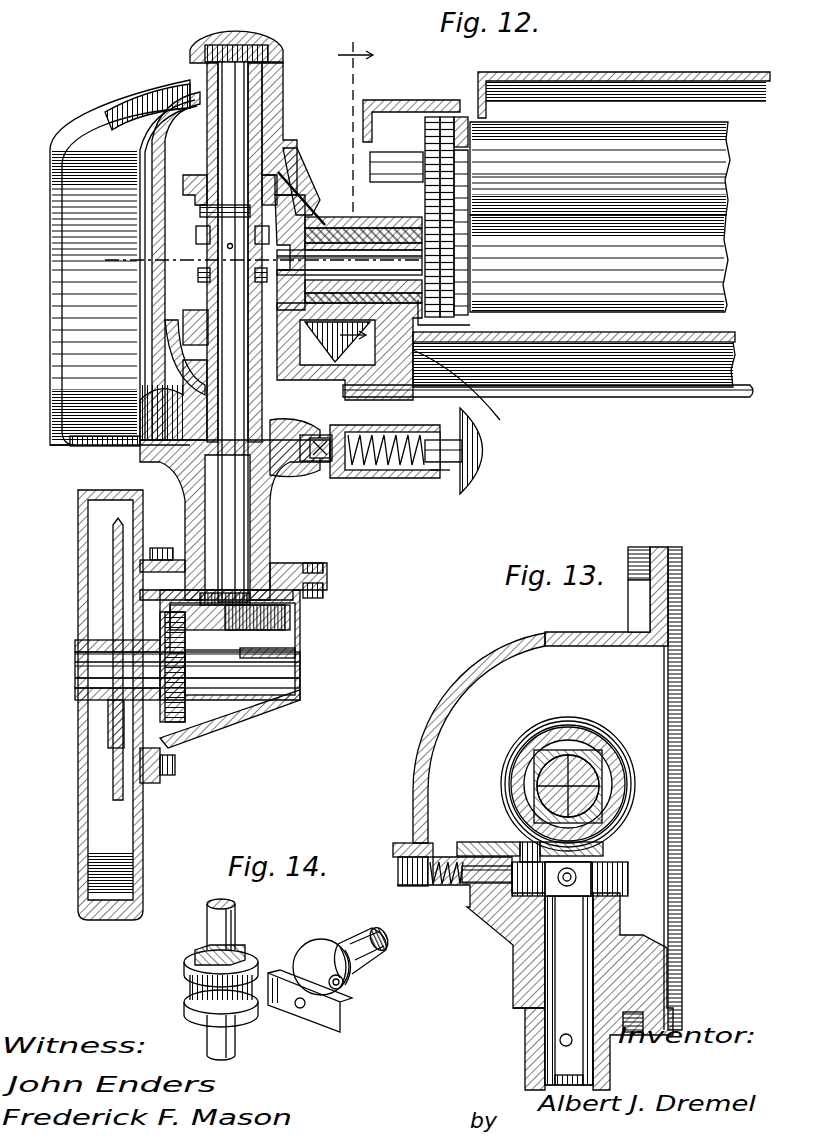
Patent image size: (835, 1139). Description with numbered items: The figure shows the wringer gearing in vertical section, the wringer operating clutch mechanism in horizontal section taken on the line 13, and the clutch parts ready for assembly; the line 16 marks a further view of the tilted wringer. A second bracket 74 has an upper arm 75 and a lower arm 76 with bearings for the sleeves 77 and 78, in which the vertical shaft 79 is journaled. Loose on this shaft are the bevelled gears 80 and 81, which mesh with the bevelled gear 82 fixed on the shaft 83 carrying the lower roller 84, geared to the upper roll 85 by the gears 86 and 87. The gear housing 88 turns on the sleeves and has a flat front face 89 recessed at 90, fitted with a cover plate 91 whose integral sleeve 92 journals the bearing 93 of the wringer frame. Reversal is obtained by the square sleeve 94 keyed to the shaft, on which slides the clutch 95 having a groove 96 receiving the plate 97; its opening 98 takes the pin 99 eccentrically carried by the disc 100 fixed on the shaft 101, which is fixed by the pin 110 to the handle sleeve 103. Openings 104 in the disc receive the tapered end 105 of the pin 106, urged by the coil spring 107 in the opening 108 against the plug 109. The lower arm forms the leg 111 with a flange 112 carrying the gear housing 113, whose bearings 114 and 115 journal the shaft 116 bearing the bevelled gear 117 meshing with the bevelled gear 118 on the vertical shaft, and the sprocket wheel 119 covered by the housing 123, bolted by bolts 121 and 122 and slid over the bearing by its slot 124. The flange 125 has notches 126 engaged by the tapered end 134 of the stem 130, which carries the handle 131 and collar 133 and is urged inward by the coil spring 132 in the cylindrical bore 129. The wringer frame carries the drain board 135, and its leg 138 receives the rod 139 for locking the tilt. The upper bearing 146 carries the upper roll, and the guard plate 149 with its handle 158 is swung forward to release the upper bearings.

In FIG. 12, the section line 13— 13 is at (256, 262).
In FIG. 12, the section line 16— 16 is at (355, 193).
In FIG. 12, the second bracket 74 is at (58, 250).
In FIG. 12, the upper arm 75 is at (125, 118).
In FIG. 12, the lower arm 76 is at (80, 447).
In FIG. 12, the upper sleeve 77 is at (272, 92).
In FIG. 12, the lower sleeve 78 is at (170, 455).
In FIG. 12, the vertical shaft 79 is at (230, 78).
In FIG. 13, the vertical shaft 79 is at (615, 814).
In FIG. 14, the vertical shaft 79 is at (207, 920).
In FIG. 12, the bevelled gear 80 is at (278, 180).
In FIG. 12, the bevelled gear 81 is at (185, 330).
In FIG. 12, the bevelled gear 82 is at (300, 205).
In FIG. 12, the roller shaft 83 is at (350, 213).
In FIG. 12, the lower roller 84 is at (599, 263).
In FIG. 12, the upper roll 85 is at (600, 168).
In FIG. 12, the gear 86 is at (446, 268).
In FIG. 12, the gear 87 is at (433, 118).
In FIG. 12, the gear housing 88 is at (155, 212).
In FIG. 13, the gear housing 88 is at (478, 668).
In FIG. 13, the flat front face 89 is at (676, 1033).
In FIG. 13, the recess 90 is at (676, 990).
In FIG. 12, the cover plate 91 is at (290, 200).
In FIG. 12, the outwardly extending sleeve 92 is at (445, 290).
In FIG. 12, the end bearing 93 is at (425, 322).
In FIG. 12, the sleeve 94 is at (205, 224).
In FIG. 13, the sleeve 94 is at (605, 777).
In FIG. 14, the sleeve 94 is at (238, 945).
In FIG. 12, the clutch 95 is at (200, 250).
In FIG. 13, the clutch 95 is at (592, 737).
In FIG. 14, the clutch 95 is at (252, 962).
In FIG. 13, the circumferential groove 96 is at (540, 736).
In FIG. 14, the circumferential groove 96 is at (192, 988).
In FIG. 13, the plate 97 is at (468, 845).
In FIG. 14, the plate 97 is at (326, 1018).
In FIG. 14, the opening 98 is at (297, 1008).
In FIG. 13, the pin 99 is at (512, 805).
In FIG. 14, the pin 99 is at (345, 988).
In FIG. 13, the disc 100 is at (630, 873).
In FIG. 14, the disc 100 is at (355, 965).
In FIG. 13, the shaft 101 is at (548, 972).
In FIG. 14, the shaft 101 is at (362, 938).
In FIG. 13, the sleeve 103 is at (527, 1060).
In FIG. 13, the openings 104 is at (567, 887).
In FIG. 14, the openings 104 is at (330, 938).
In FIG. 13, the tapered end 105 is at (503, 847).
In FIG. 13, the pin 106 is at (470, 908).
In FIG. 13, the coil spring 107 is at (430, 905).
In FIG. 13, the opening 108 is at (415, 845).
In FIG. 13, the plug 109 is at (404, 868).
In FIG. 13, the pin 110 is at (560, 1042).
In FIG. 12, the leg 111 is at (320, 548).
In FIG. 12, the flange 112 is at (325, 577).
In FIG. 12, the integral gear housing 113 is at (235, 706).
In FIG. 12, the bearing 114 is at (262, 660).
In FIG. 12, the bearing 115 is at (105, 640).
In FIG. 12, the shaft 116 is at (278, 668).
In FIG. 12, the bevelled gear 117 is at (183, 715).
In FIG. 12, the bevelled gear 118 is at (280, 625).
In FIG. 12, the sprocket wheel 119 is at (112, 750).
In FIG. 12, the bolts 121 is at (160, 547).
In FIG. 12, the bolts 122 is at (172, 765).
In FIG. 12, the housing 123 is at (78, 800).
In FIG. 12, the slot 124 is at (110, 700).
In FIG. 12, the flange 125 is at (283, 490).
In FIG. 12, the notches 126 is at (125, 447).
In FIG. 12, the cylindrical bore 129 is at (432, 472).
In FIG. 12, the stem 130 is at (440, 442).
In FIG. 12, the handle 131 is at (480, 455).
In FIG. 12, the coil spring 132 is at (385, 470).
In FIG. 12, the collar 133 is at (305, 440).
In FIG. 12, the tapered end 134 is at (318, 460).
In FIG. 12, the drain board 135 is at (562, 345).
In FIG. 12, the leg 138 is at (469, 390).
In FIG. 12, the rod 139 is at (643, 398).
In FIG. 12, the upper bearing 146 is at (380, 105).
In FIG. 12, the upper roll guard plate 149 is at (598, 72).
In FIG. 12, the handle 158 is at (732, 102).